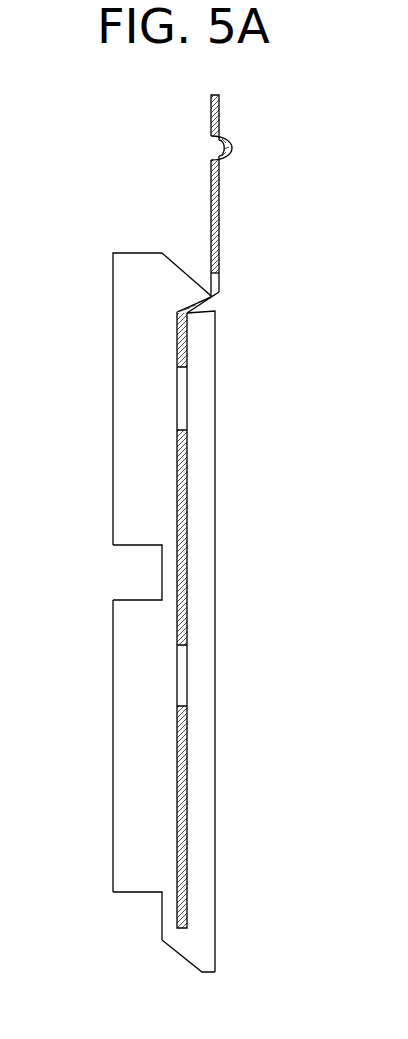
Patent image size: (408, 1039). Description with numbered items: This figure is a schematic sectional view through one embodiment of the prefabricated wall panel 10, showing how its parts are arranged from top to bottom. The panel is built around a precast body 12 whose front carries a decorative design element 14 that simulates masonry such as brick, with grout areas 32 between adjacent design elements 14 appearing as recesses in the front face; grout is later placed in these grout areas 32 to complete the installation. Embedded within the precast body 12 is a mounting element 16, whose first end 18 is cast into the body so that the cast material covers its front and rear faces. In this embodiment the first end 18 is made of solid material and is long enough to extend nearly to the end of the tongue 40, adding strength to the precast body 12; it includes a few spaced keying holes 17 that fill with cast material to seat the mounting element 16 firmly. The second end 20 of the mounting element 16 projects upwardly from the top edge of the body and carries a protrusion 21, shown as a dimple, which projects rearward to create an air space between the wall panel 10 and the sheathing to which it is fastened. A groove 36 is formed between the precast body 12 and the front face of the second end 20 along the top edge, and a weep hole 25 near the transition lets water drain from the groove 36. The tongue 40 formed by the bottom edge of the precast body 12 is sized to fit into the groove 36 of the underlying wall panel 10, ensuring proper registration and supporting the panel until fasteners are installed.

The prefabricated wall panel 10 is at (272, 176).
The precast body 12 is at (205, 587).
The decorative design element 14 is at (105, 383).
The mounting element 16 is at (214, 198).
The keying holes 17 is at (182, 392).
The first end 18 is at (188, 514).
The second end 20 is at (220, 217).
The protrusion 21 is at (228, 134).
The weep hole 25 is at (219, 285).
The grout area 32 is at (162, 577).
The groove 36 is at (188, 273).
The tongue 40 is at (207, 973).